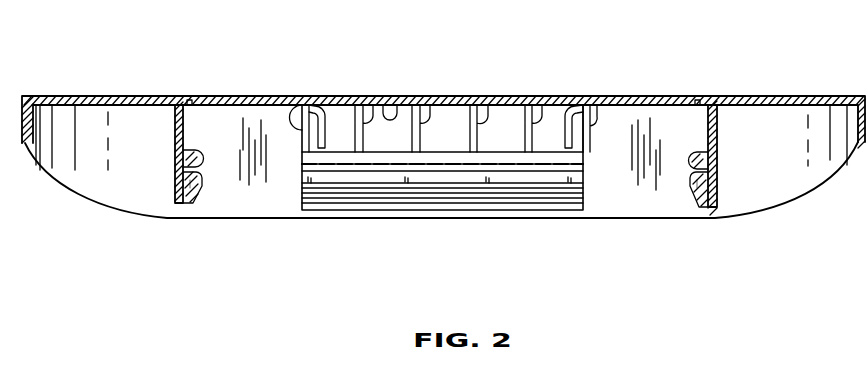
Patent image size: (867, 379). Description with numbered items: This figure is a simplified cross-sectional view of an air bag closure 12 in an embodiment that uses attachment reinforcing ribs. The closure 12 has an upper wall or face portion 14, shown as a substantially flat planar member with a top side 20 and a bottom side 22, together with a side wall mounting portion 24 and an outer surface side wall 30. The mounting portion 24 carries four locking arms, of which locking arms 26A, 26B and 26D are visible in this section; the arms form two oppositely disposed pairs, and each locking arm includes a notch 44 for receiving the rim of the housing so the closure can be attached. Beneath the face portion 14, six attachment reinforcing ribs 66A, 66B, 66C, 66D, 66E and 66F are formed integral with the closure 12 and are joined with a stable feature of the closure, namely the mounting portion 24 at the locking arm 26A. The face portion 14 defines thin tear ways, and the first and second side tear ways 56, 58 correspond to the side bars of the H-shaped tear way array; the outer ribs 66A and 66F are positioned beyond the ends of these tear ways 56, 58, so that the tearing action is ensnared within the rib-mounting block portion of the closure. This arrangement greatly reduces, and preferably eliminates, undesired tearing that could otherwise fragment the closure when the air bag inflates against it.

The closure 12 is at (278, 178).
The face portion 14 is at (229, 97).
The top side 20 is at (633, 97).
The bottom side 22 is at (394, 97).
The side wall mounting portion 24 is at (178, 195).
The locking arm 26A is at (432, 198).
The locking arm 26B is at (713, 208).
The locking arm 26D is at (187, 178).
The outer surface side wall 30 is at (784, 158).
The notch 44 is at (190, 180).
The first side tear way 56 is at (191, 97).
The second side tear way 58 is at (697, 97).
The attachment reinforcing rib 66A is at (295, 105).
The attachment reinforcing rib 66B is at (370, 105).
The attachment reinforcing rib 66C is at (425, 97).
The attachment reinforcing rib 66D is at (485, 97).
The attachment reinforcing rib 66E is at (540, 97).
The attachment reinforcing rib 66F is at (592, 97).